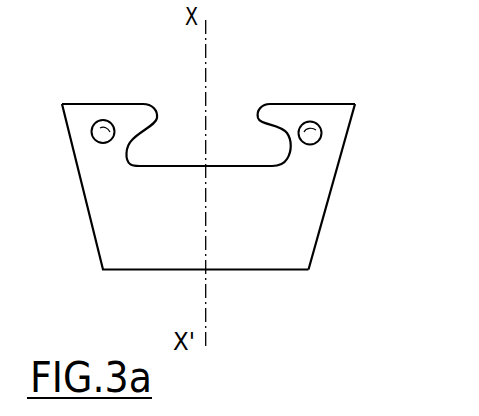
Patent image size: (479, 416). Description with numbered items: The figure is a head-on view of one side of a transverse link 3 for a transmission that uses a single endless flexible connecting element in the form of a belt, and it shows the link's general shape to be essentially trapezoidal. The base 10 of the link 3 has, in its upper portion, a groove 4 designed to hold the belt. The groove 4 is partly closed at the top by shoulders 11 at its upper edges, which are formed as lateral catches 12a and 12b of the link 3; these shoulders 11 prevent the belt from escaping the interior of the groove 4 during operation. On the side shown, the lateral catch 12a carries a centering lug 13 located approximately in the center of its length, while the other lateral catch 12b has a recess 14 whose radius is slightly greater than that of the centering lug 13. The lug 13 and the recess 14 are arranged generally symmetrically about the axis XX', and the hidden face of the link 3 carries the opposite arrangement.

The transverse link 3 is at (335, 180).
The groove 4 is at (244, 145).
The base 10 is at (288, 235).
The shoulders 11 is at (281, 113).
The lateral catch 12a is at (123, 113).
The lateral catch 12b is at (337, 122).
The centering lug 13 is at (93, 134).
The recess 14 is at (320, 123).